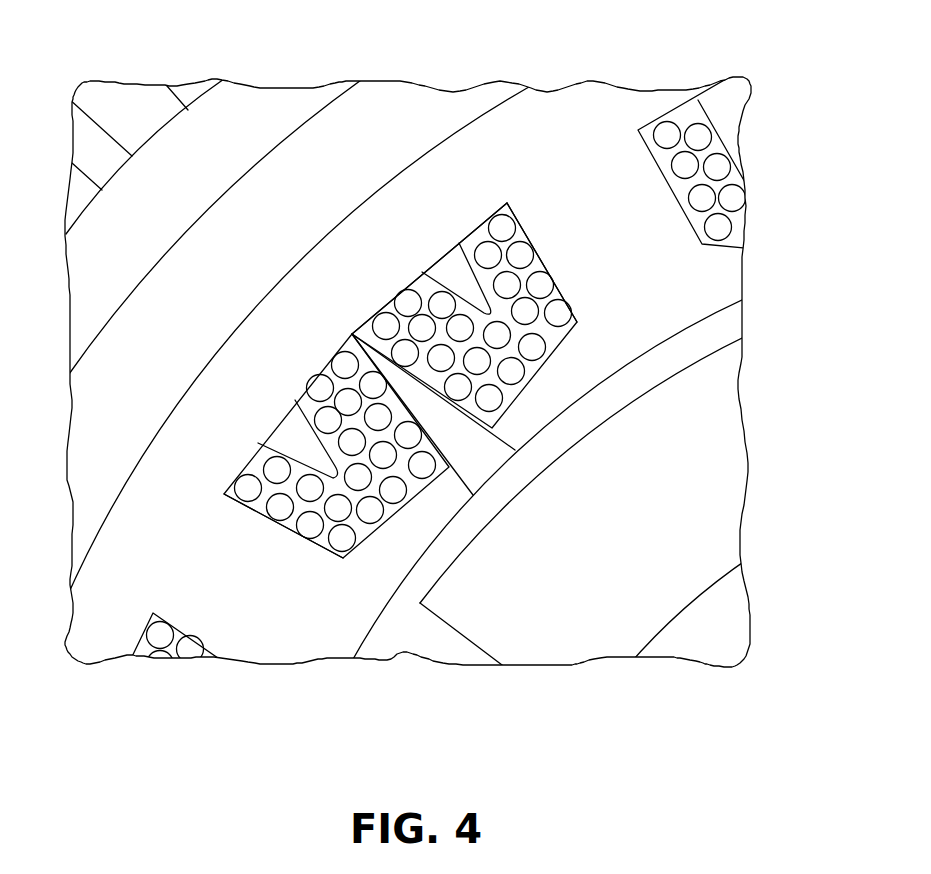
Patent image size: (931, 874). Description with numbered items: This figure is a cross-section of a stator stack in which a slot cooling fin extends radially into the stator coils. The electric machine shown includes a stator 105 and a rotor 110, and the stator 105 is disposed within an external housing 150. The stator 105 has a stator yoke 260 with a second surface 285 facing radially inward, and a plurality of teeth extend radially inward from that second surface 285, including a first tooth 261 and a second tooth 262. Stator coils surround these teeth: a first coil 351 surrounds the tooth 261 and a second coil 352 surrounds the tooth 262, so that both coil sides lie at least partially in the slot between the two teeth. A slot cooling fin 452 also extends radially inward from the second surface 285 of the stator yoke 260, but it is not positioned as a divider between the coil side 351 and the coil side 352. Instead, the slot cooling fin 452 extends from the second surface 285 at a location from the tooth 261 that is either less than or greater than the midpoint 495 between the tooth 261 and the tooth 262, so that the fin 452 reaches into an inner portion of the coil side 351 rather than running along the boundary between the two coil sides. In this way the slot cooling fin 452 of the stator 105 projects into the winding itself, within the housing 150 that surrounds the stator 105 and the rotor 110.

The stator 105 is at (608, 97).
The rotor 110 is at (725, 419).
The external housing 150 is at (416, 100).
The stator yoke 260 is at (379, 242).
The first tooth 261 is at (244, 613).
The second tooth 262 is at (597, 226).
The second surface 285 is at (398, 292).
The first coil 351 is at (382, 458).
The second coil 352 is at (527, 317).
The slot cooling fin 452 is at (280, 451).
The midpoint 495 is at (354, 336).